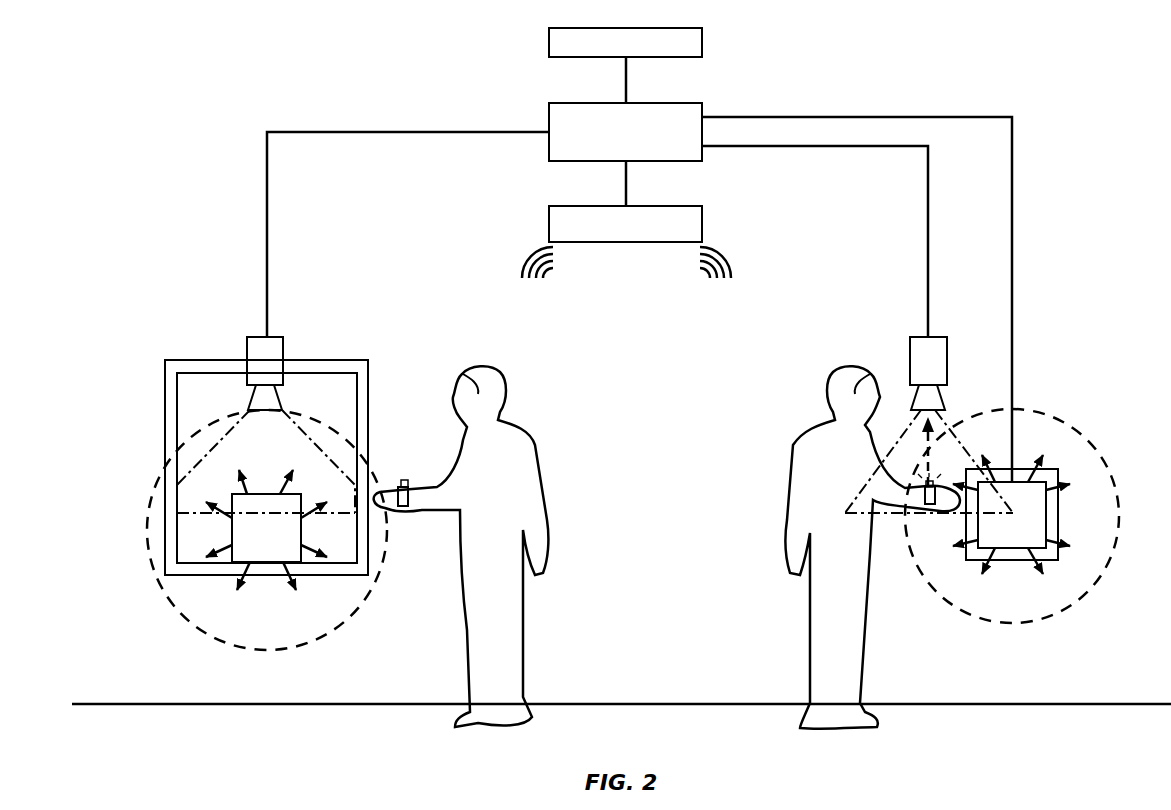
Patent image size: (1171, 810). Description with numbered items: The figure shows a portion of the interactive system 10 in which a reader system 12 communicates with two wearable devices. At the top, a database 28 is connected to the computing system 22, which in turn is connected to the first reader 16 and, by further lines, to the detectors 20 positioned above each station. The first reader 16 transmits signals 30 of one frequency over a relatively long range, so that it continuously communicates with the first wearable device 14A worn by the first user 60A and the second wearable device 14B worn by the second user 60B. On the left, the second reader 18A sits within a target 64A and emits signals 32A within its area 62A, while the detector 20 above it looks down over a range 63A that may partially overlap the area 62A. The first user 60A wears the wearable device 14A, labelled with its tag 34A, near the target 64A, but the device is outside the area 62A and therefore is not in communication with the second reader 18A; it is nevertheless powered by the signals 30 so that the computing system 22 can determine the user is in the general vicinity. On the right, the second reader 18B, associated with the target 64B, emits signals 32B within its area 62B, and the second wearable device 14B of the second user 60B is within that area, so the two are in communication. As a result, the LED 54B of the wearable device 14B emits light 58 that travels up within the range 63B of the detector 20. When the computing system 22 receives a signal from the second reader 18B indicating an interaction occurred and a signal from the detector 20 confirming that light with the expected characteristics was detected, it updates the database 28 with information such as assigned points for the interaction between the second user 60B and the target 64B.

The interactive system 10 is at (140, 98).
The reader system 12 is at (735, 68).
The database 28 is at (626, 28).
The computing system 22 is at (665, 103).
The first reader 16 is at (703, 224).
The signals 30 is at (532, 270).
The detector 20 is at (279, 337).
The target 64A is at (320, 360).
The range 63A is at (198, 458).
The area 62A is at (147, 527).
The second reader 18A is at (267, 528).
The signals 32A is at (225, 547).
The wearable tag 34A is at (410, 483).
The first wearable device 14A is at (422, 505).
The first user 60A is at (485, 370).
The second user 60B is at (838, 376).
The light 58 is at (922, 430).
The range 63B is at (963, 437).
The signals 32B is at (1068, 483).
The second reader 18B is at (1037, 515).
The area 62B is at (1032, 622).
The target 64B is at (1012, 560).
The LED 54B is at (927, 490).
The second wearable device 14B is at (934, 505).